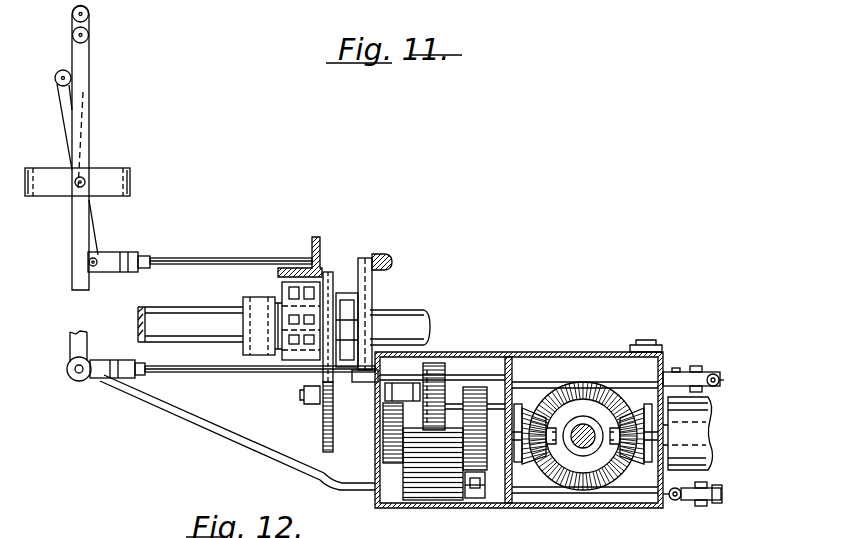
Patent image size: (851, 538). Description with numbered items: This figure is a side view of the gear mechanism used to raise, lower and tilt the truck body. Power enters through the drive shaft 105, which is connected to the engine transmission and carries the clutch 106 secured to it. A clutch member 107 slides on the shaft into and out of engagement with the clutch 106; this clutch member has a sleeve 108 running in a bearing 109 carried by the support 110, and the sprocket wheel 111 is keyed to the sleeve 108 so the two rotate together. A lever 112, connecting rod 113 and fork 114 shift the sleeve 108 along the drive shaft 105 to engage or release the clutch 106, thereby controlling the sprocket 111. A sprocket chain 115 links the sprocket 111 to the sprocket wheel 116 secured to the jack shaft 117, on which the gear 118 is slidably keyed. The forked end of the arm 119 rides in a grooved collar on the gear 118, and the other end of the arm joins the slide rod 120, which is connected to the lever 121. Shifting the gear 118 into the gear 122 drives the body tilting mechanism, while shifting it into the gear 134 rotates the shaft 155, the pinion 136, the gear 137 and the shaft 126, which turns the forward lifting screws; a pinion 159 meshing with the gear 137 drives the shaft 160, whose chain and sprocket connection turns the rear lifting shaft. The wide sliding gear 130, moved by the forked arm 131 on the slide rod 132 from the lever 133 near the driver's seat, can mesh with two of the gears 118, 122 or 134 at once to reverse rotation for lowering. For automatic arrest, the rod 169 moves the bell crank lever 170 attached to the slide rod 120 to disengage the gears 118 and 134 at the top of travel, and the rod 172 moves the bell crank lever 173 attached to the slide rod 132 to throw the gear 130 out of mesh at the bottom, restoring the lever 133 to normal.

The drive shaft 105 is at (418, 321).
The clutch 106 is at (247, 298).
The clutch member 107 is at (282, 298).
The sleeve 108 is at (358, 306).
The bearing 109 is at (328, 277).
The support 110 is at (315, 238).
The sprocket wheel 111 is at (362, 262).
The lever 112 is at (148, 83).
The connecting rod 113 is at (153, 252).
The fork 114 is at (392, 263).
The sprocket chain 115 is at (312, 379).
The sprocket wheel 116 is at (325, 422).
The jack shaft 117 is at (471, 387).
The gear 118 is at (431, 366).
The arm 119 is at (466, 378).
The slide rod 120 is at (233, 373).
The lever 121 is at (145, 43).
The gear 122 is at (513, 358).
The shaft 126 is at (583, 415).
The sliding gear 130 is at (435, 500).
The forked arm 131 is at (475, 498).
The slide rod 132 is at (249, 441).
The lever 133 is at (145, 19).
The gear 134 is at (380, 443).
The pinion 136 is at (532, 463).
The gear 137 is at (605, 383).
The shaft 155 is at (413, 387).
The pinion 159 is at (640, 464).
The shaft 160 is at (705, 451).
The rod 169 is at (704, 376).
The bell crank lever 170 is at (716, 386).
The rod 172 is at (676, 500).
The bell crank lever 173 is at (705, 503).